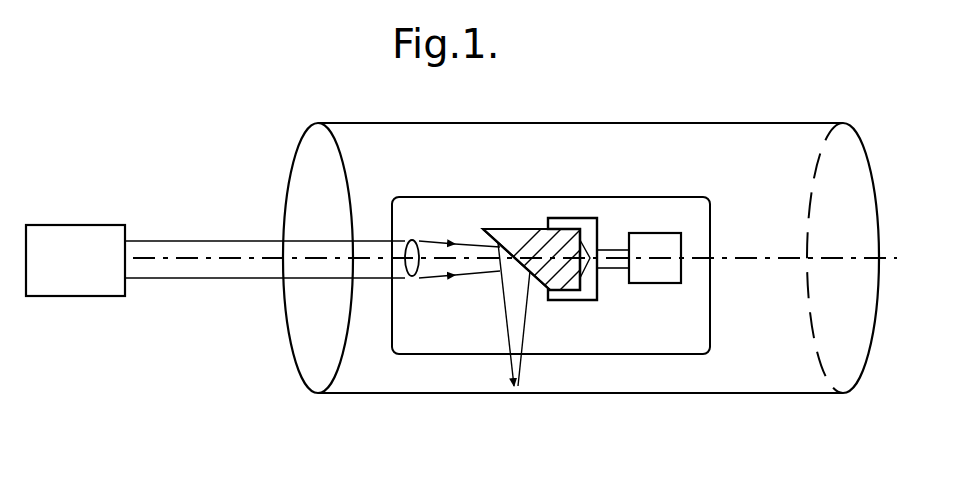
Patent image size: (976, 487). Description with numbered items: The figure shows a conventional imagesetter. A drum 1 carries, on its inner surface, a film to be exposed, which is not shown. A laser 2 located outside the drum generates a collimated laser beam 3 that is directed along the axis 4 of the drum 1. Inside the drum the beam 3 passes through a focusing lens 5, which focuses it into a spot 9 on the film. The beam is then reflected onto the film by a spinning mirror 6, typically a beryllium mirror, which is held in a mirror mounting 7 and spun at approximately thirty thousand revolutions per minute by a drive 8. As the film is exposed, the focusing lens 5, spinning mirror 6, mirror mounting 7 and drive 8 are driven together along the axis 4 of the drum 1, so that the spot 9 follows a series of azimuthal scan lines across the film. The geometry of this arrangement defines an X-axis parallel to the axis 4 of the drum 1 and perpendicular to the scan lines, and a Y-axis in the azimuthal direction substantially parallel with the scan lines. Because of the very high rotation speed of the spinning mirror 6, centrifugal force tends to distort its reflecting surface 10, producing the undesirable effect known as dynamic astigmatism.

The drum 1 is at (361, 122).
The laser 2 is at (63, 225).
The laser beam 3 is at (200, 279).
The axis 4 is at (757, 258).
The focusing lens 5 is at (412, 240).
The spinning mirror 6 is at (518, 229).
The mirror mounting 7 is at (582, 218).
The drive 8 is at (657, 284).
The spot 9 is at (516, 390).
The reflecting surface 10 is at (540, 290).